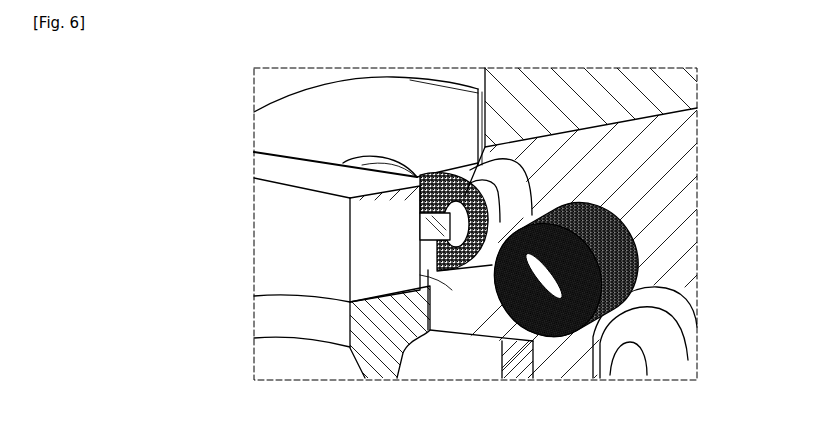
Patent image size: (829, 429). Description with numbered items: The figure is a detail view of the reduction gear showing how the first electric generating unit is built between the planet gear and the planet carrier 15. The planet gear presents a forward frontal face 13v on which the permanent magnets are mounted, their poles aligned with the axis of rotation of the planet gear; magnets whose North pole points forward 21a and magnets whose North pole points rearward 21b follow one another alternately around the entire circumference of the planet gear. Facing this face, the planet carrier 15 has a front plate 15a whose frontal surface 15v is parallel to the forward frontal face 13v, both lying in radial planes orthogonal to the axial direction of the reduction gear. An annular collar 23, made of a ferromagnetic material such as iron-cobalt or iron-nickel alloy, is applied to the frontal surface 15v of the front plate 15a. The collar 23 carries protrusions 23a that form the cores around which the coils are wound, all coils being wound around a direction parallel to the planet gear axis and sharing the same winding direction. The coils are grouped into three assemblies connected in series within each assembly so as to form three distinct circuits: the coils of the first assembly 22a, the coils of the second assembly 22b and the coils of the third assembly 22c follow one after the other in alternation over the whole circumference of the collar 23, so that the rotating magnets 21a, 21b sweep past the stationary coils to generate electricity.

The planet carrier 15 is at (281, 227).
The front plate 15a is at (316, 172).
The frontal surface 15v is at (417, 177).
The forward frontal face 13v is at (473, 166).
The third coil assembly 22c is at (481, 176).
The magnets of which the North pole points forward 21a is at (497, 180).
The magnets of which the North pole points rearward 21b is at (577, 220).
The protrusions 23a is at (433, 223).
The annular collar 23 is at (428, 274).
The second coil assembly 22b is at (557, 337).
The first coil assembly 22a is at (648, 357).